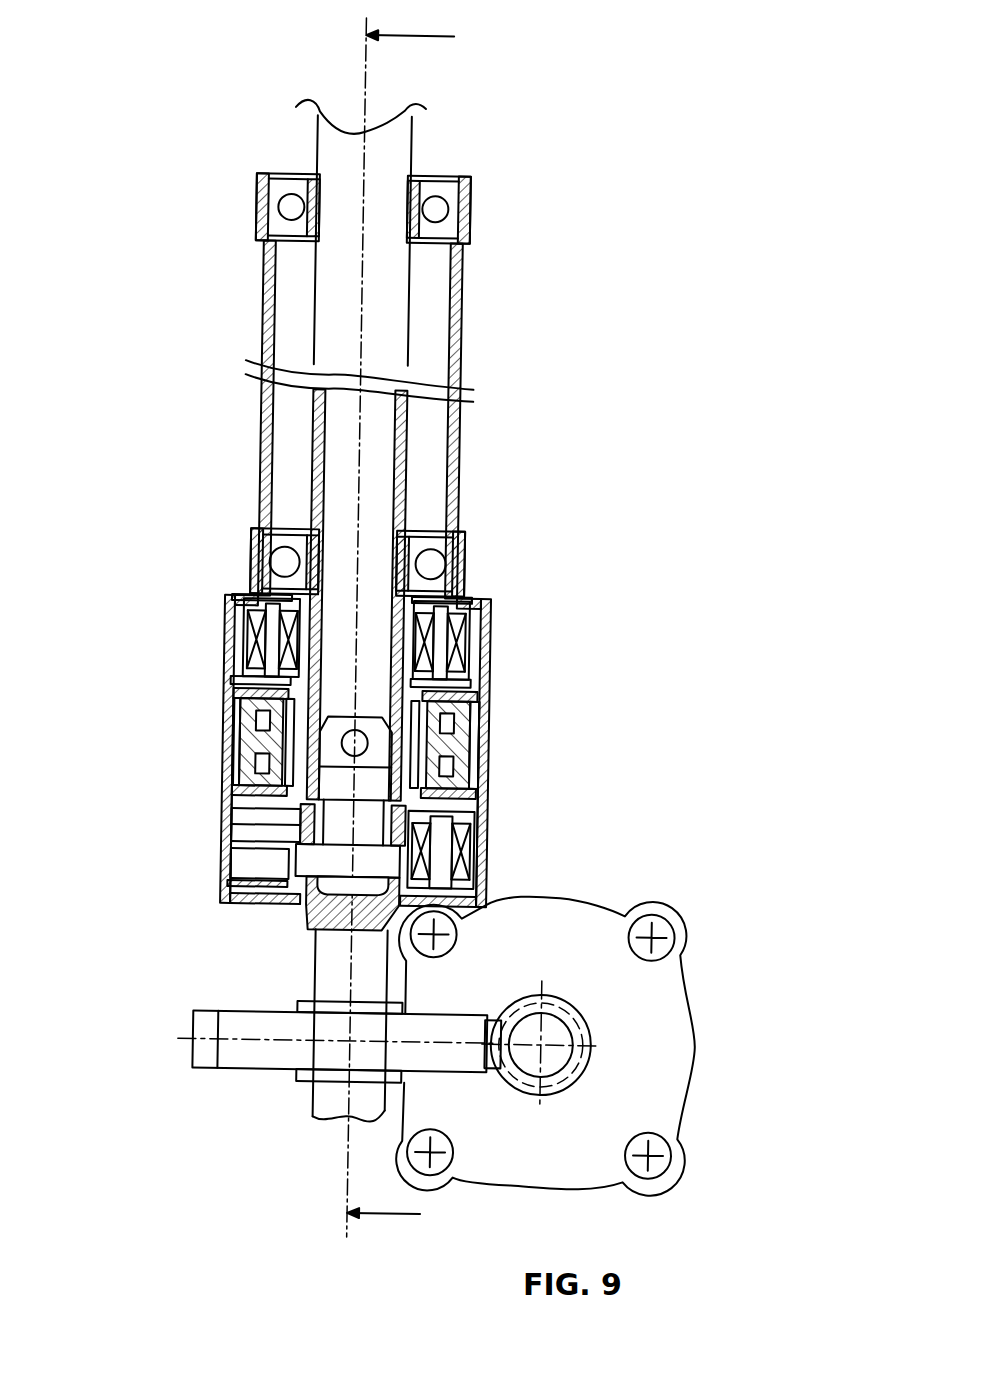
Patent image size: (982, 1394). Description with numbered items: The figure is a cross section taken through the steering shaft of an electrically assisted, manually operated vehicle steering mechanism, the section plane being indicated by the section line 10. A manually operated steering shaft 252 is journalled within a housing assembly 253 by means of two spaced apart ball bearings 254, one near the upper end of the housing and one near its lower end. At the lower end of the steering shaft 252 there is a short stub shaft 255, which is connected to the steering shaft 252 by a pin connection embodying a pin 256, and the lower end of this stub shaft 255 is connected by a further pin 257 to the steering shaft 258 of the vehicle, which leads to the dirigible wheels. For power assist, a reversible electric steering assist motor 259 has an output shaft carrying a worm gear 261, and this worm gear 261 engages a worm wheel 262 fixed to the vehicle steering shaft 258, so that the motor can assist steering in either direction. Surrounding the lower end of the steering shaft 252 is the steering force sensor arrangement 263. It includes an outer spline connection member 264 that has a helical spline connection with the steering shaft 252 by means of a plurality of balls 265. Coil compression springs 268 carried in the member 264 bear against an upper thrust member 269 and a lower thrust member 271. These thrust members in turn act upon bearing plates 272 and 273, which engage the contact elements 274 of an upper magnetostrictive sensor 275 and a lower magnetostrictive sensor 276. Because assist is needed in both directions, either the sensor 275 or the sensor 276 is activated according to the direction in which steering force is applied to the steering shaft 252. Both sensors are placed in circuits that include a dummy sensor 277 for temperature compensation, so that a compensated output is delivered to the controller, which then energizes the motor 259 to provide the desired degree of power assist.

The section line 10 is at (401, 625).
The steering shaft 252 is at (415, 133).
The housing assembly 253 is at (460, 318).
The ball bearings 254 is at (443, 207).
The stub shaft 255 is at (300, 813).
The pin 256 is at (340, 735).
The pin 257 is at (310, 858).
The steering shaft of the vehicle 258 is at (308, 1100).
The electric steering assist motor 259 is at (686, 988).
The worm gear 261 is at (593, 1060).
The worm wheel 262 is at (193, 1058).
The steering force sensor arrangement 263 is at (182, 675).
The outer spline connection member 264 is at (492, 772).
The balls 265 is at (492, 762).
The coil compression springs 268 is at (245, 767).
The upper thrust member 269 is at (492, 700).
The lower thrust member 271 is at (492, 785).
The bearing plate 272 is at (492, 670).
The bearing plate 273 is at (492, 827).
The contact elements 274 is at (492, 667).
The upper magnetostrictive sensor 275 is at (492, 663).
The lower magnetostrictive sensor 276 is at (492, 845).
The dummy sensor 277 is at (245, 640).